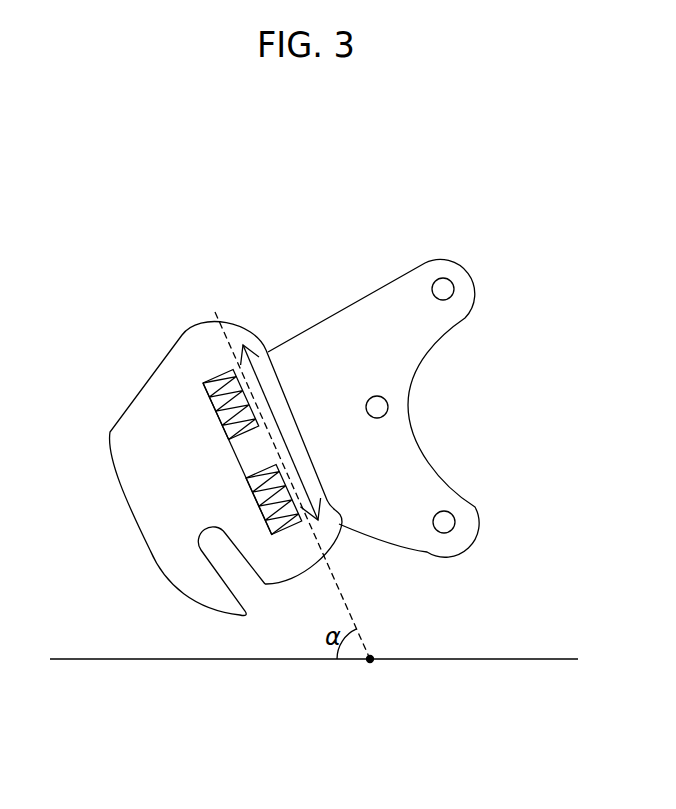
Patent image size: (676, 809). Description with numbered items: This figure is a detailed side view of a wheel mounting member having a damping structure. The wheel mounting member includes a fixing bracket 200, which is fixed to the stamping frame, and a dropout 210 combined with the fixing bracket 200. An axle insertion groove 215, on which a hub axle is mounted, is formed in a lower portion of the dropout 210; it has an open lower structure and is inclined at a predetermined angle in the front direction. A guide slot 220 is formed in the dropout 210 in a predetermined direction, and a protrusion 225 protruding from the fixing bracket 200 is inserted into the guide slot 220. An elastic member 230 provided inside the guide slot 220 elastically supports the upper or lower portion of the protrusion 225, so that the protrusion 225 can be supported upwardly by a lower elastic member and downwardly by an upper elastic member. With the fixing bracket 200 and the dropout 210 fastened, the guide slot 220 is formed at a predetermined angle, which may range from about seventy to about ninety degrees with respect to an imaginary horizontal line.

The fixing bracket 200 is at (365, 317).
The dropout 210 is at (157, 417).
The axle insertion groove 215 is at (217, 548).
The guide slot 220 is at (287, 532).
The protrusion 225 is at (248, 452).
The elastic member 230 is at (218, 377).